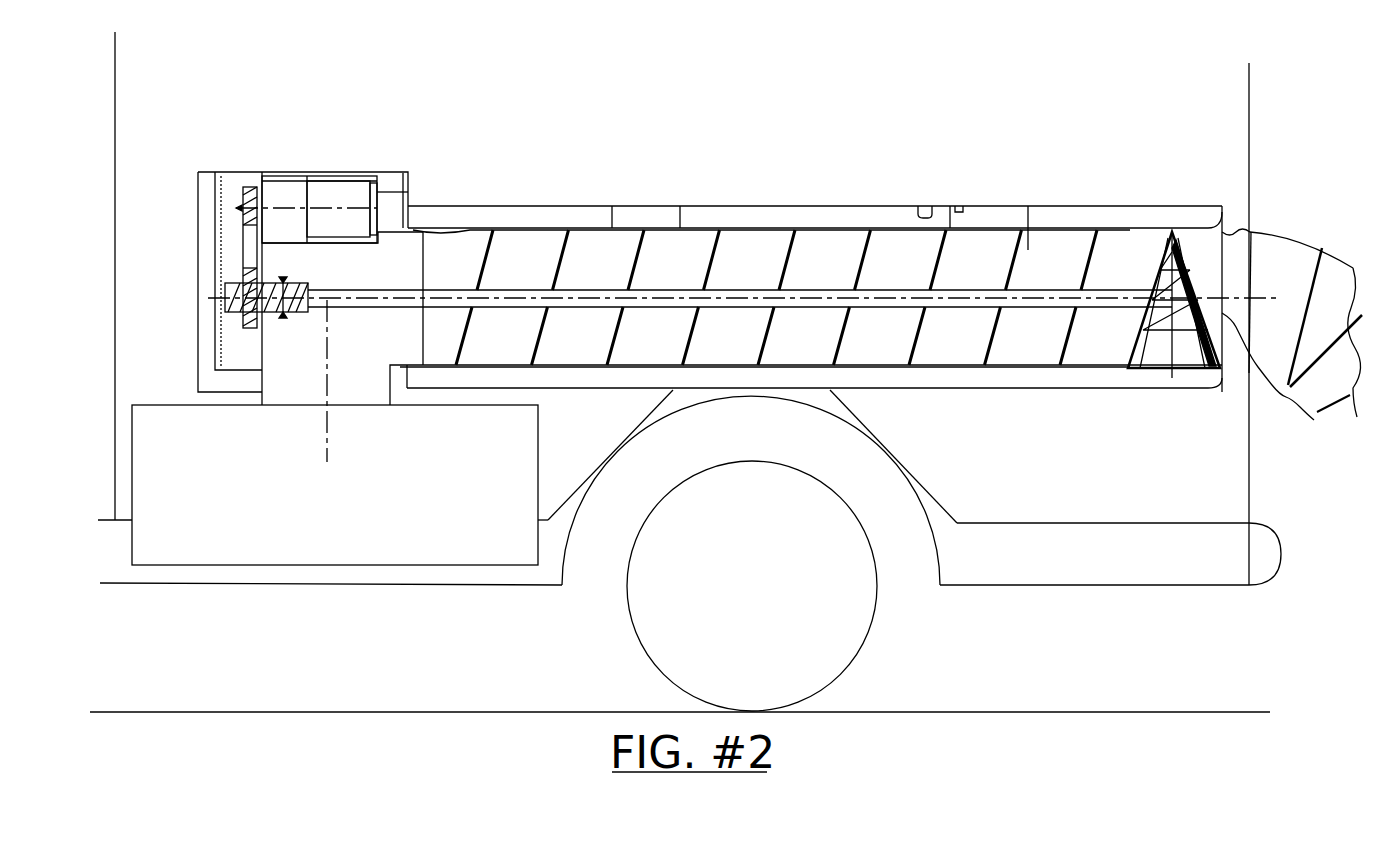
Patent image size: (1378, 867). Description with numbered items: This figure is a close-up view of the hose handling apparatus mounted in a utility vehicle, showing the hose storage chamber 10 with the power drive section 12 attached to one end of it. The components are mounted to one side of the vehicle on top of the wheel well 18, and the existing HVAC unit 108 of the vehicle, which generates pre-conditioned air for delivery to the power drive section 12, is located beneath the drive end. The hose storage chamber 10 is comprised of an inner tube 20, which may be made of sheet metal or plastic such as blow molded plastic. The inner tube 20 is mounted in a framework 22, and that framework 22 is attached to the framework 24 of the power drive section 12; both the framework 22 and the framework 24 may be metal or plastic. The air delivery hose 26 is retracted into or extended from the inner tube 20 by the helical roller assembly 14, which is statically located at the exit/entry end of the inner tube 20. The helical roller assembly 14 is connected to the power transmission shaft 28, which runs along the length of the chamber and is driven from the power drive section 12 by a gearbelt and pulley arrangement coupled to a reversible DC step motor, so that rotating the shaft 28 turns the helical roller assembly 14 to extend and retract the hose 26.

The hose storage chamber 10 is at (703, 185).
The power drive section 12 is at (279, 158).
The helical roller assembly 14 is at (1143, 265).
The wheel well 18 is at (918, 478).
The inner tube 20 is at (825, 228).
The framework 22 is at (935, 206).
The framework 24 is at (410, 188).
The air delivery hose 26 is at (612, 206).
The power transmission shaft 28 is at (1028, 230).
The HVAC unit 108 is at (408, 500).